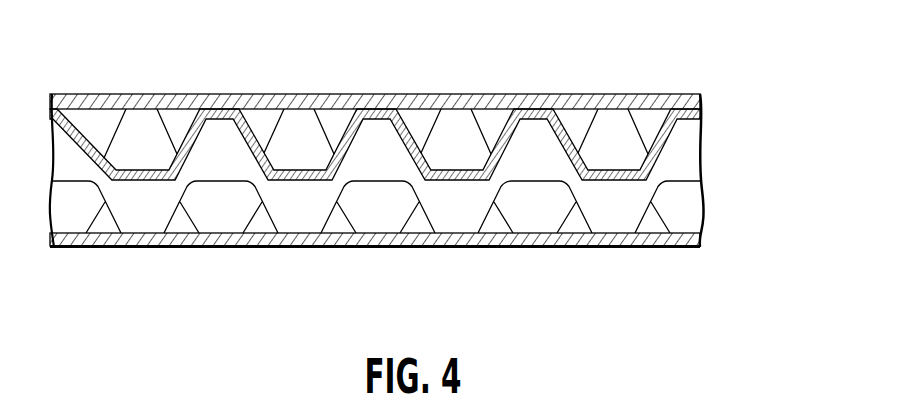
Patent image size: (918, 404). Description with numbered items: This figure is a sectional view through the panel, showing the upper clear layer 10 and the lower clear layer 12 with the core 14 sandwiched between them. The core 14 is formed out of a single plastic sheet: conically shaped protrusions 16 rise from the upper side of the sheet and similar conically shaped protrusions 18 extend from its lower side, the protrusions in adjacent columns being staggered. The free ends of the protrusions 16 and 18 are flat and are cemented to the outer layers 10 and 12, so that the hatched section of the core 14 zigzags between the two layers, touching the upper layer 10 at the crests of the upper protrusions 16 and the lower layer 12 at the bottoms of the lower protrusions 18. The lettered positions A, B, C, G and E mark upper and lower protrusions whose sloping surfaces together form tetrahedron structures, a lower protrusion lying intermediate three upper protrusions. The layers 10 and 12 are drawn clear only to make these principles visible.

The upper clear layer 10 is at (658, 100).
The lower clear layer 12 is at (657, 240).
The core 14 is at (420, 173).
The conically shaped protrusions (upper) 16 is at (137, 123).
The conically shaped protrusions (lower) 18 is at (225, 207).